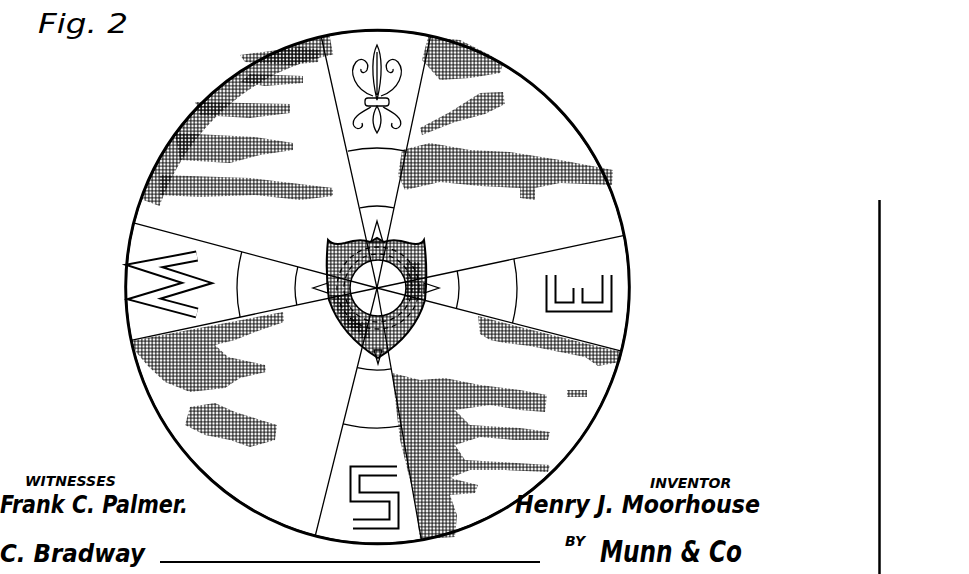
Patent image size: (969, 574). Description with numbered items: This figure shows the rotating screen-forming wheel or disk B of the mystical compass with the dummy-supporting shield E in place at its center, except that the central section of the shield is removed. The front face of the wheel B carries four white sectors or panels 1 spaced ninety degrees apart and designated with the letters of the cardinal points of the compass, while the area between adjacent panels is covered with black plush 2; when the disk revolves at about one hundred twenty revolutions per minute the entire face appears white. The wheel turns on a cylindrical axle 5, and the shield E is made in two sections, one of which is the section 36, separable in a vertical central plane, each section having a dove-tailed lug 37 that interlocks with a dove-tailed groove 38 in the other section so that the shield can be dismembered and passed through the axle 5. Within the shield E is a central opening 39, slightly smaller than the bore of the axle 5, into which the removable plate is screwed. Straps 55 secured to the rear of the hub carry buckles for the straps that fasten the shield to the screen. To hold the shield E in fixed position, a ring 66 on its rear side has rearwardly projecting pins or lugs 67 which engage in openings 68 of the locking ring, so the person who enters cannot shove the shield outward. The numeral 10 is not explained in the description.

The rotating screen-forming wheel or disk B is at (593, 152).
The white sectors or panels 1 is at (618, 264).
The black plush 2 is at (611, 203).
The cylindrical axle 5 is at (406, 255).
The center cap 10 is at (378, 288).
The dove-tailed groove 38 is at (345, 240).
The central opening 39 is at (403, 283).
The shield section 36 is at (410, 313).
The dove-tailed lug 37 is at (387, 343).
The shield or support E is at (404, 277).
The ring 66 is at (338, 306).
The straps 55 is at (343, 323).
The pins or lugs 67 is at (350, 325).
The openings 68 is at (357, 330).